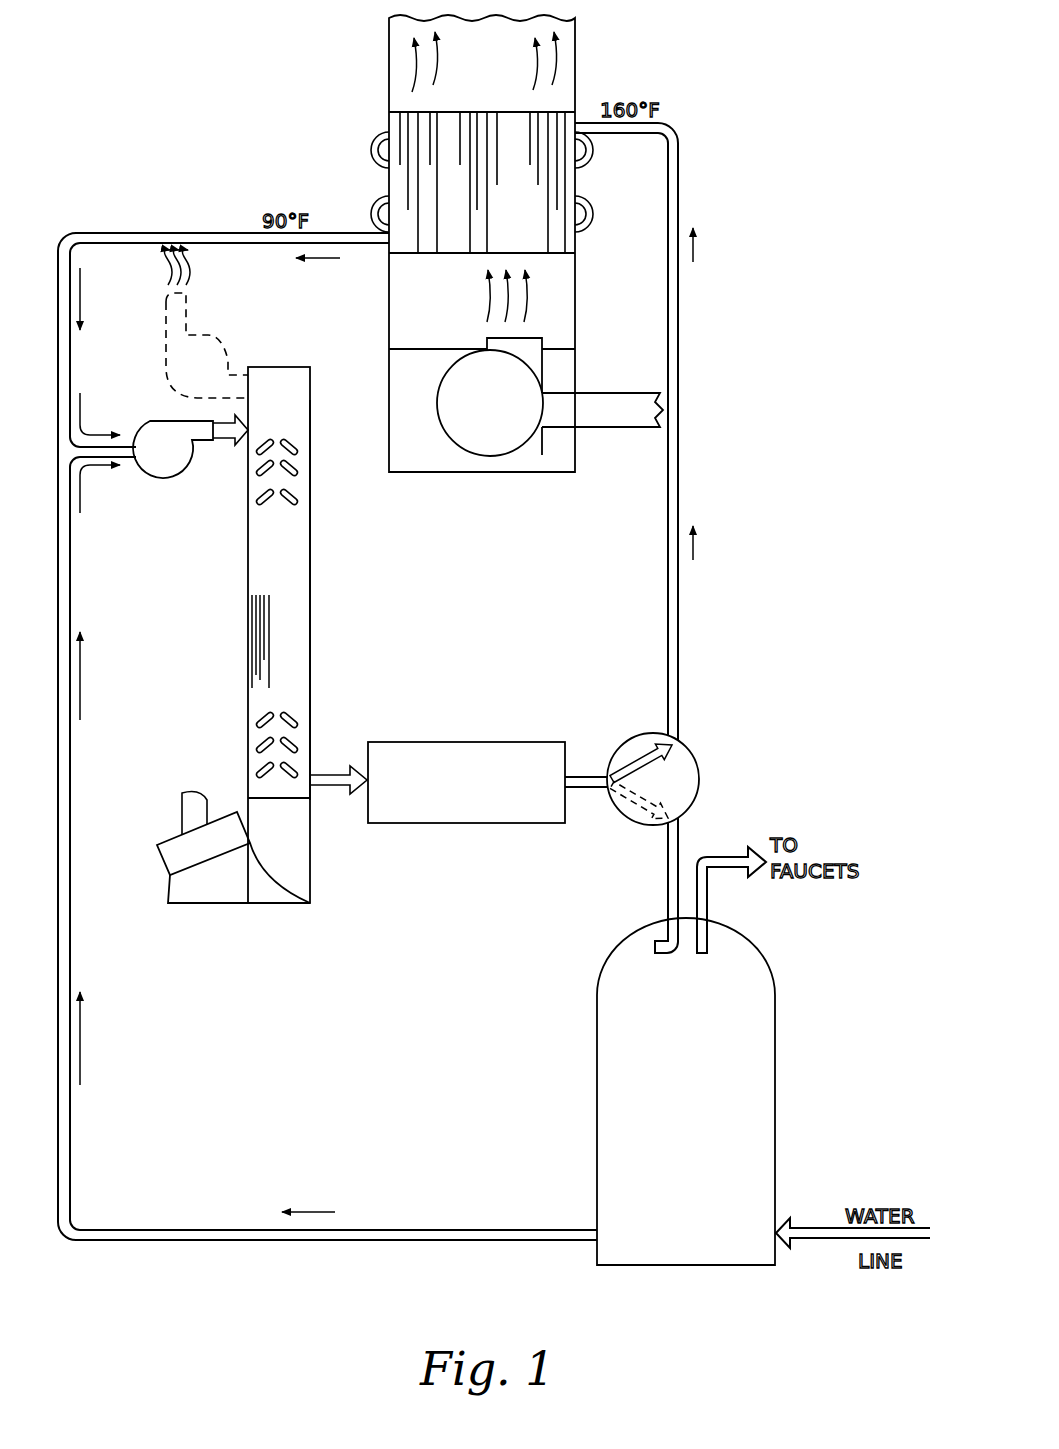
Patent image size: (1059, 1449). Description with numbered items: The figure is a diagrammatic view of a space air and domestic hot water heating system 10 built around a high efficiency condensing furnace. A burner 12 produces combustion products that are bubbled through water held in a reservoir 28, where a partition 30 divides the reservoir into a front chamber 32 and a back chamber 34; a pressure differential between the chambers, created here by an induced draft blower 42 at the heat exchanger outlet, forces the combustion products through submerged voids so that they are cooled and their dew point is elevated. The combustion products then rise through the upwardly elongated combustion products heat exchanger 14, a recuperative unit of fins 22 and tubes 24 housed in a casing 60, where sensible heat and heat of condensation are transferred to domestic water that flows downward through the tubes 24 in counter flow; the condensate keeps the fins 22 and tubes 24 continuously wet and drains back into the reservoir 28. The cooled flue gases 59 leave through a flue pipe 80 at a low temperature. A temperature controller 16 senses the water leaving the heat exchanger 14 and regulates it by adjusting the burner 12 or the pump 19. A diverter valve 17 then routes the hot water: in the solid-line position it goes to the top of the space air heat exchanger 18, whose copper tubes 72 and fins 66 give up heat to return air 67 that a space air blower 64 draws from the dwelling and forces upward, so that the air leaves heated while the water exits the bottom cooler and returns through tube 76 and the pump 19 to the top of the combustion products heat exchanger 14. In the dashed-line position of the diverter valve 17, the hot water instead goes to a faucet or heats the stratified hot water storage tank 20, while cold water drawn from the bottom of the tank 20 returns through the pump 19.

The space air and domestic hot water heating system 10 is at (754, 84).
The burner 12 is at (167, 840).
The combustion products heat exchanger 14 is at (322, 597).
The temperature controller 16 is at (457, 742).
The diverter valve 17 is at (699, 770).
The space air heat exchanger 18 is at (389, 125).
The pump 19 is at (190, 480).
The hot water storage tank 20 is at (777, 1028).
The fins 22 is at (256, 622).
The tubes 24 is at (260, 718).
The reservoir 28 is at (238, 905).
The partition 30 is at (284, 878).
The front chamber 32 is at (234, 889).
The back chamber 34 is at (292, 829).
The blower 42 is at (166, 364).
The flue gases 59 is at (162, 270).
The casing 60 is at (312, 665).
The space air blower 64 is at (456, 452).
The fins 66 is at (418, 183).
The return air 67 is at (608, 393).
The copper tubes 72 is at (371, 152).
The tube 76 is at (343, 250).
The flue pipe 80 is at (190, 318).